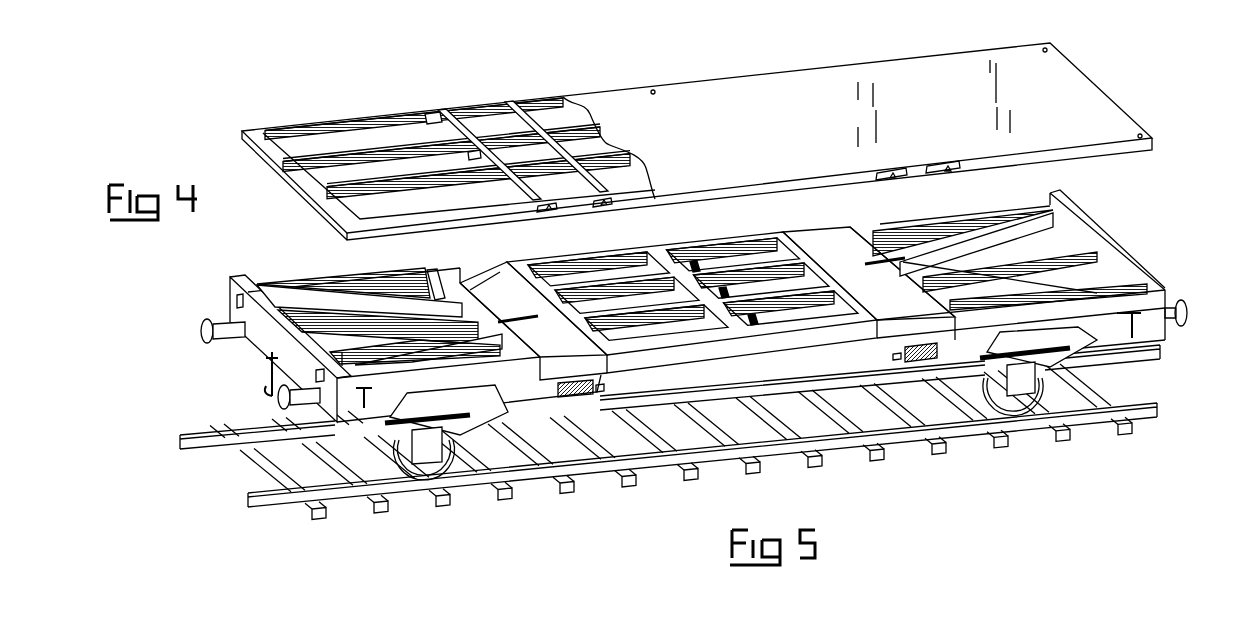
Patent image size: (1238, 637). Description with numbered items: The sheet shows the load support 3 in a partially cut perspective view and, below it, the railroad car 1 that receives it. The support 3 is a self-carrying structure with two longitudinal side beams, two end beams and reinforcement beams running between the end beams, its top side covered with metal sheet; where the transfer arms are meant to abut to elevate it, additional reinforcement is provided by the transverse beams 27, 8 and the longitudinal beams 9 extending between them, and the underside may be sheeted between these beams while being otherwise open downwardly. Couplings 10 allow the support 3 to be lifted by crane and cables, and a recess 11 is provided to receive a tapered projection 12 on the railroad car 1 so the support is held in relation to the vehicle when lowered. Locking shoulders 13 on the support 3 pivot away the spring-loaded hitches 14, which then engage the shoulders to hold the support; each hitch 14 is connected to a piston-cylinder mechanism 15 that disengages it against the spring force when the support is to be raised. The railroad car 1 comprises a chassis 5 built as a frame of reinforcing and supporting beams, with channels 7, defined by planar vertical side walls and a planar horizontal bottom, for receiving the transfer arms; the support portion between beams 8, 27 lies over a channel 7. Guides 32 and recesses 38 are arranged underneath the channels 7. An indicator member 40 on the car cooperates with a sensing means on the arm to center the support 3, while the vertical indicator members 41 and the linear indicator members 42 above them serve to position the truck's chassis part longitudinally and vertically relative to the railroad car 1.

In FIG. 5, the railroad car 1 is at (245, 350).
In FIG. 4, the support 3 is at (752, 76).
In FIG. 5, the chassis 5 is at (702, 243).
In FIG. 5, the channel 7 is at (497, 283).
In FIG. 4, the transverse beam 8 is at (528, 124).
In FIG. 4, the beam 9 is at (565, 195).
In FIG. 4, the coupling 10 is at (928, 164).
In FIG. 4, the recess 11 is at (470, 155).
In FIG. 5, the projection 12 is at (514, 322).
In FIG. 4, the locking shoulder 13 is at (432, 111).
In FIG. 5, the hitch 14 is at (425, 267).
In FIG. 5, the piston-cylinder mechanism 15 is at (445, 287).
In FIG. 4, the transverse beam 27 is at (461, 108).
In FIG. 5, the guide 32 is at (588, 398).
In FIG. 5, the recess 38 is at (601, 386).
In FIG. 5, the indicator member 40 is at (524, 326).
In FIG. 5, the indicator member 41 is at (390, 426).
In FIG. 5, the indicator member 42 is at (364, 410).